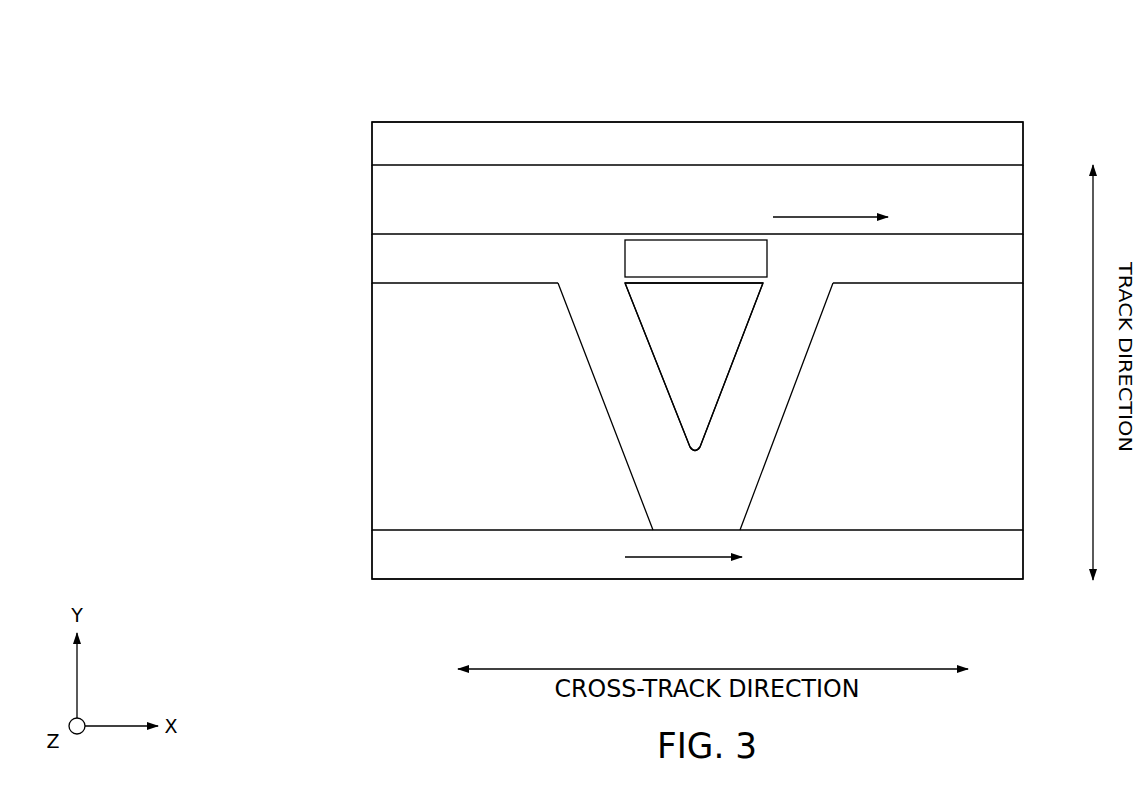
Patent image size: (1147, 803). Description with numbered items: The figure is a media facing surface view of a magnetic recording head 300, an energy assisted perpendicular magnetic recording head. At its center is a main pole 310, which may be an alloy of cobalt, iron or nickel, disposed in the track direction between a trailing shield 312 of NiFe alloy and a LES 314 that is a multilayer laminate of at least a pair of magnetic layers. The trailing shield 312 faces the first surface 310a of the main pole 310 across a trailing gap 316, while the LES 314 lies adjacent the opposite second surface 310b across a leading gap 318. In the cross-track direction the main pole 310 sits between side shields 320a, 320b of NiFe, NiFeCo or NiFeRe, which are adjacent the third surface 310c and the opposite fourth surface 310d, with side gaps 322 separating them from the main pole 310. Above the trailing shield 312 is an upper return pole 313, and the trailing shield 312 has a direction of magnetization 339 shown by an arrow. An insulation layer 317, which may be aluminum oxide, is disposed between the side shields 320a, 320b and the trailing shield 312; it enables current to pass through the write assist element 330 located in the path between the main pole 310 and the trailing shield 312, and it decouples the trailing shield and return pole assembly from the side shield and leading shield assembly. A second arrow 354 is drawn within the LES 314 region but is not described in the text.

The magnetic recording head 300 is at (387, 75).
The upper return pole 313 is at (673, 158).
The trailing shield 312 is at (673, 213).
The direction of magnetization 339 is at (840, 216).
The trailing gap 316 is at (390, 275).
The insulation layer 317 is at (951, 275).
The write assist element 330 is at (678, 273).
The side gaps 322 is at (614, 400).
The main pole 310 is at (678, 375).
The first surface 310a is at (735, 285).
The second surface 310b is at (695, 449).
The third surface 310c is at (641, 325).
The fourth surface 310d is at (753, 318).
The side shield 320a is at (453, 440).
The side shield 320b is at (883, 435).
The leading gap 318 is at (678, 510).
The LES 314 is at (826, 570).
The direction arrow 354 is at (682, 558).